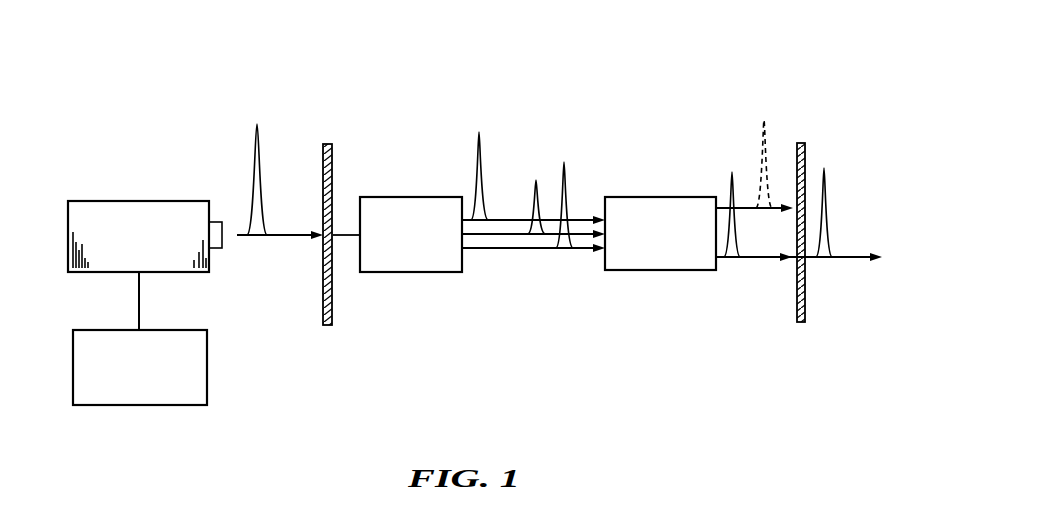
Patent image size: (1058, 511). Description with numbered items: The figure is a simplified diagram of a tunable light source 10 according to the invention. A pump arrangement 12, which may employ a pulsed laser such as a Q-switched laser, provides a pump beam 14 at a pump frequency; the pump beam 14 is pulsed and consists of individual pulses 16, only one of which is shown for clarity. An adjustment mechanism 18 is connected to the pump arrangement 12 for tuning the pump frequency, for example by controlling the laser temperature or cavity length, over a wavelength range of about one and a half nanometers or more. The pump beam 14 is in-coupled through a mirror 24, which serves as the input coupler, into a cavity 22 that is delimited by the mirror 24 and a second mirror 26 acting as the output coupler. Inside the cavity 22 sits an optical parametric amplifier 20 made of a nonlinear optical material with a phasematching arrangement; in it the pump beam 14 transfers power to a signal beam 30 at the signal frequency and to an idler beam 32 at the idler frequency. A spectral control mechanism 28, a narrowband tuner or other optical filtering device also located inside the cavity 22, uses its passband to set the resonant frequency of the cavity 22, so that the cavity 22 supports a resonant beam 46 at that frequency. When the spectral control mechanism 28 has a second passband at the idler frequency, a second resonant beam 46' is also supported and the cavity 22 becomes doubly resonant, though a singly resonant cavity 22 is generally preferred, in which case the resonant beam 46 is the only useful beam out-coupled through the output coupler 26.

The tunable light source 10 is at (626, 73).
The pump arrangement 12 is at (165, 201).
The pump beam 14 is at (277, 237).
The pulse 16 is at (283, 134).
The adjustment mechanism 18 is at (208, 353).
The optical parametric amplifier 20 is at (403, 197).
The cavity 22 is at (556, 310).
The mirror 24 is at (331, 151).
The mirror 26 is at (800, 323).
The spectral control mechanism 28 is at (683, 271).
The signal beam 30 is at (502, 219).
The idler beam 32 is at (548, 250).
The resonant beam 46 is at (697, 233).
The resonant beam 46' is at (771, 138).